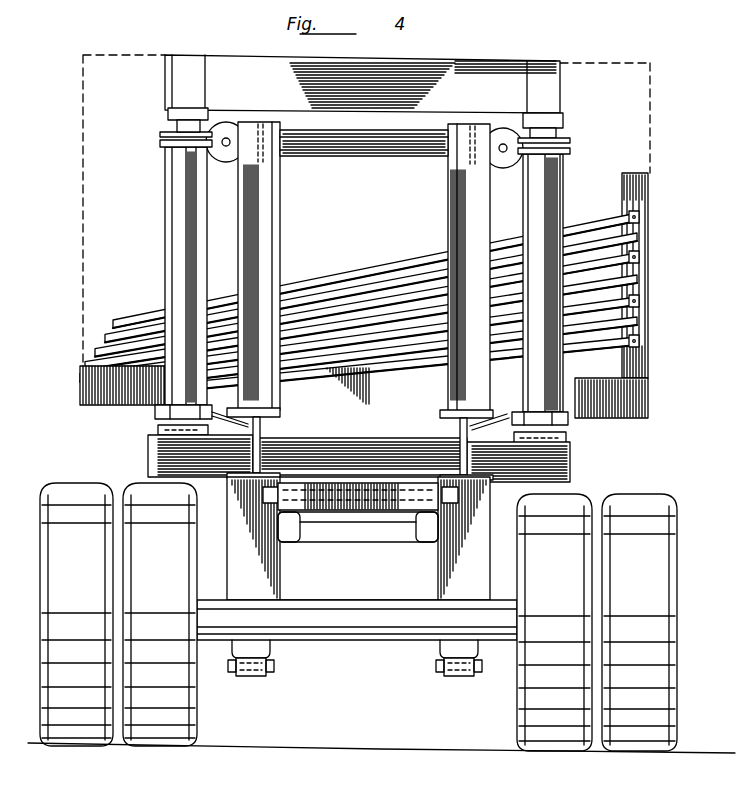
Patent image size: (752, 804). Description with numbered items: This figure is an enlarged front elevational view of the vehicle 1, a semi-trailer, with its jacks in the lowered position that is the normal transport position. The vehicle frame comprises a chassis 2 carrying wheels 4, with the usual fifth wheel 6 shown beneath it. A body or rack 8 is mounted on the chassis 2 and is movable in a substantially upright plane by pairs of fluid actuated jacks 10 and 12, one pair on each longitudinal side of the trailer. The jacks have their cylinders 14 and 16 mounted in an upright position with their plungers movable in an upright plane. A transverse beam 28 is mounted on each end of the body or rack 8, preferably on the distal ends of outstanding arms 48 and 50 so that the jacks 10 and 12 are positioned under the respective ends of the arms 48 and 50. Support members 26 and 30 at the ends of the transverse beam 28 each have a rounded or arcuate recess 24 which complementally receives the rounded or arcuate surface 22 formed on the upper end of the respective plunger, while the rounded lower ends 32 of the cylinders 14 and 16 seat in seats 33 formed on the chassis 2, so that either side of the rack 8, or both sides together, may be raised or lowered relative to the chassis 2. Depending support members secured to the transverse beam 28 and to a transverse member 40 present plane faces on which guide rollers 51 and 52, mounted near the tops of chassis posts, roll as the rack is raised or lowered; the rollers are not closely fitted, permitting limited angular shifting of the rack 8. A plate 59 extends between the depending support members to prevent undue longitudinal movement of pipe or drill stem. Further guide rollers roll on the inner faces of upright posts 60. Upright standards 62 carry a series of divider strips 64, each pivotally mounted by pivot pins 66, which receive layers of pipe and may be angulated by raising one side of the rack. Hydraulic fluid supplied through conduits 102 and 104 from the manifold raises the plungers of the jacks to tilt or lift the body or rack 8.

The vehicle 1 is at (144, 456).
The chassis 2 is at (462, 461).
The wheels 4 is at (150, 749).
The fifth wheel 6 is at (351, 535).
The body or rack 8 is at (654, 392).
The fluid actuated jack 10 is at (164, 243).
The fluid actuated jack 12 is at (566, 183).
The cylinder 14 is at (171, 203).
The cylinder 16 is at (562, 208).
The rounded or arcuate surface 22 is at (187, 113).
The rounded or arcuate recess 24 is at (178, 109).
The support member 26 is at (213, 126).
The transverse beam 28 is at (451, 66).
The support member 30 is at (566, 122).
The rounded end 32 is at (158, 416).
The seat 33 is at (174, 440).
The transverse member 40 is at (90, 382).
The outstanding arm 48 is at (183, 61).
The outstanding arm 50 is at (548, 66).
The guide roller 51 is at (230, 124).
The guide roller 52 is at (501, 128).
The plate 59 is at (652, 150).
The upright post 60 is at (270, 210).
The upright standard 62 is at (642, 285).
The divider strip 64 is at (638, 341).
The pivot pin 66 is at (639, 257).
The conduit 102 is at (262, 427).
The conduit 104 is at (450, 431).